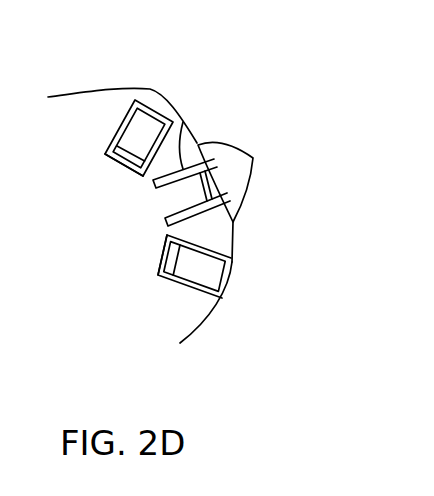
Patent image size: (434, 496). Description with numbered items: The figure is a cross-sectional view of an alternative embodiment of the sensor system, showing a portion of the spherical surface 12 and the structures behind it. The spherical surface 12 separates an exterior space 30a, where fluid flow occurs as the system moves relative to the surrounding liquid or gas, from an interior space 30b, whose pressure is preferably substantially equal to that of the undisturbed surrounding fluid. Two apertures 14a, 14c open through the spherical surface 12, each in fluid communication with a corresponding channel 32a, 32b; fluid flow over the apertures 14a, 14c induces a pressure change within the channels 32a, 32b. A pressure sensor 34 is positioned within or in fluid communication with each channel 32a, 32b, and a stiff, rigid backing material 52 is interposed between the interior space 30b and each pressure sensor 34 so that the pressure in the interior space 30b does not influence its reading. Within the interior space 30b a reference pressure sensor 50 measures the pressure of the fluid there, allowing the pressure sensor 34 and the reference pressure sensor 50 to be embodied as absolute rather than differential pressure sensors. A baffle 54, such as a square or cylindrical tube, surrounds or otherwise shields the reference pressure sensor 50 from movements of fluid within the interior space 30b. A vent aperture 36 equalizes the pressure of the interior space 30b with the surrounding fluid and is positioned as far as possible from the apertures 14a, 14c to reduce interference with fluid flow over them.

The spherical surface 12 is at (68, 93).
The aperture 14a is at (144, 106).
The aperture 14c is at (231, 258).
The channel 32a is at (145, 112).
The channel 32b is at (200, 272).
The pressure sensor 34 is at (122, 152).
The vent aperture 36 is at (259, 153).
The reference pressure sensor 50 is at (172, 191).
The backing material 52 is at (123, 165).
The baffle 54 is at (190, 128).
The exterior space 30a is at (280, 324).
The interior space 30b is at (83, 258).